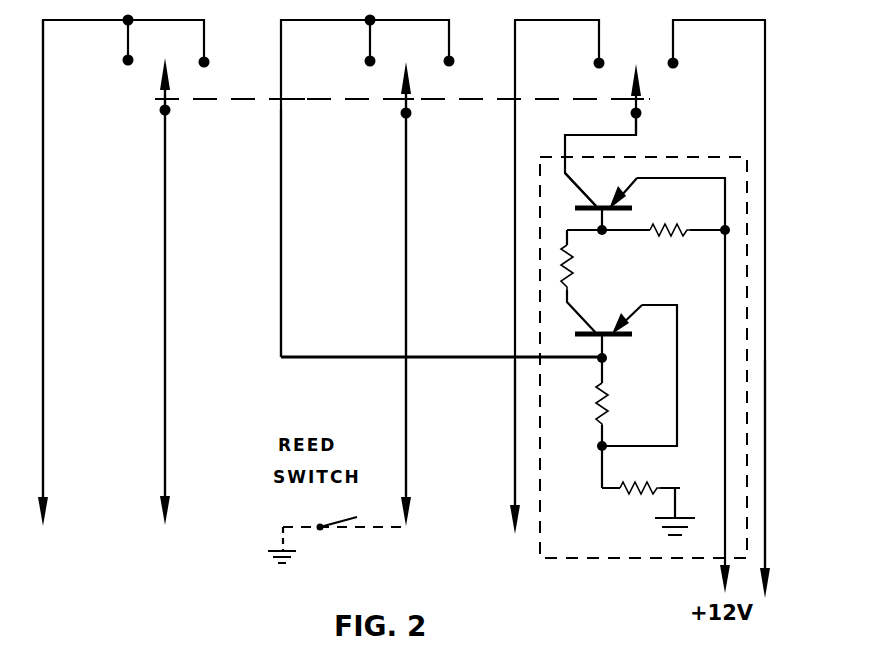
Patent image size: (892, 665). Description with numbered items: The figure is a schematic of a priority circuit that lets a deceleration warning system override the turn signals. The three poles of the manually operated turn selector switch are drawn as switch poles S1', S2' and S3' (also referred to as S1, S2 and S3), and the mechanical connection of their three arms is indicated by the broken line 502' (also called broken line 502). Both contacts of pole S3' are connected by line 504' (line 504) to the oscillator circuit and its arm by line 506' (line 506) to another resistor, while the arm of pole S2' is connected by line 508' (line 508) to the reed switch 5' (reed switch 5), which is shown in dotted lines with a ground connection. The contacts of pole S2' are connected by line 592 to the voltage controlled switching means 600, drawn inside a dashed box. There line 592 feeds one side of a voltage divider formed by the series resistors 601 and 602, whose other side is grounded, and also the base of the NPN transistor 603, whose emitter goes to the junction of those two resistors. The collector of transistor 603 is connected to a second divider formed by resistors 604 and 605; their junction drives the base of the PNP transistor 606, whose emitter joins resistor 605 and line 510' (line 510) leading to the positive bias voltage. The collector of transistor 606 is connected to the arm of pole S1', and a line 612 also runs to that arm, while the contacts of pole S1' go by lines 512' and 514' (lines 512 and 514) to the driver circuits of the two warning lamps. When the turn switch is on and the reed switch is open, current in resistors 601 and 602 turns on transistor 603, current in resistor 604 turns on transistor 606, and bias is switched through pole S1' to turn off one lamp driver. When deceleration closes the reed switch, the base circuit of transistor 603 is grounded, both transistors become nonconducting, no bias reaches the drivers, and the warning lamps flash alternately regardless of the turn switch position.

The line 504' is at (70, 273).
The line 506' is at (192, 307).
The broken line 502' is at (324, 117).
The line 592 is at (318, 296).
The line 508' is at (431, 310).
The line 514' is at (491, 447).
The line 512' is at (791, 479).
The line 510' is at (686, 413).
The voltage controlled switching means 600 is at (747, 352).
The line 612 is at (642, 129).
The PNP transistor 606 is at (634, 200).
The resistor 605 is at (662, 237).
The resistor 604 is at (595, 286).
The NPN transistor 603 is at (607, 345).
The resistor 601 is at (598, 421).
The resistor 602 is at (655, 491).
The reed switch 5' is at (336, 544).
The switch pole S1' is at (646, 83).
The switch pole S2' is at (419, 78).
The switch pole S3' is at (175, 79).
The conductor line 504 is at (70, 273).
The conductor line 506 is at (192, 307).
The broken line 502 is at (324, 117).
The conductor line 508 is at (431, 310).
The conductor line 514 is at (491, 447).
The conductor line 512 is at (791, 479).
The conductor line to +12V 510 is at (686, 413).
The reed switch 5 is at (336, 544).
The switch pole S1 is at (646, 83).
The switch section S2 is at (419, 78).
The switch S3 is at (175, 79).